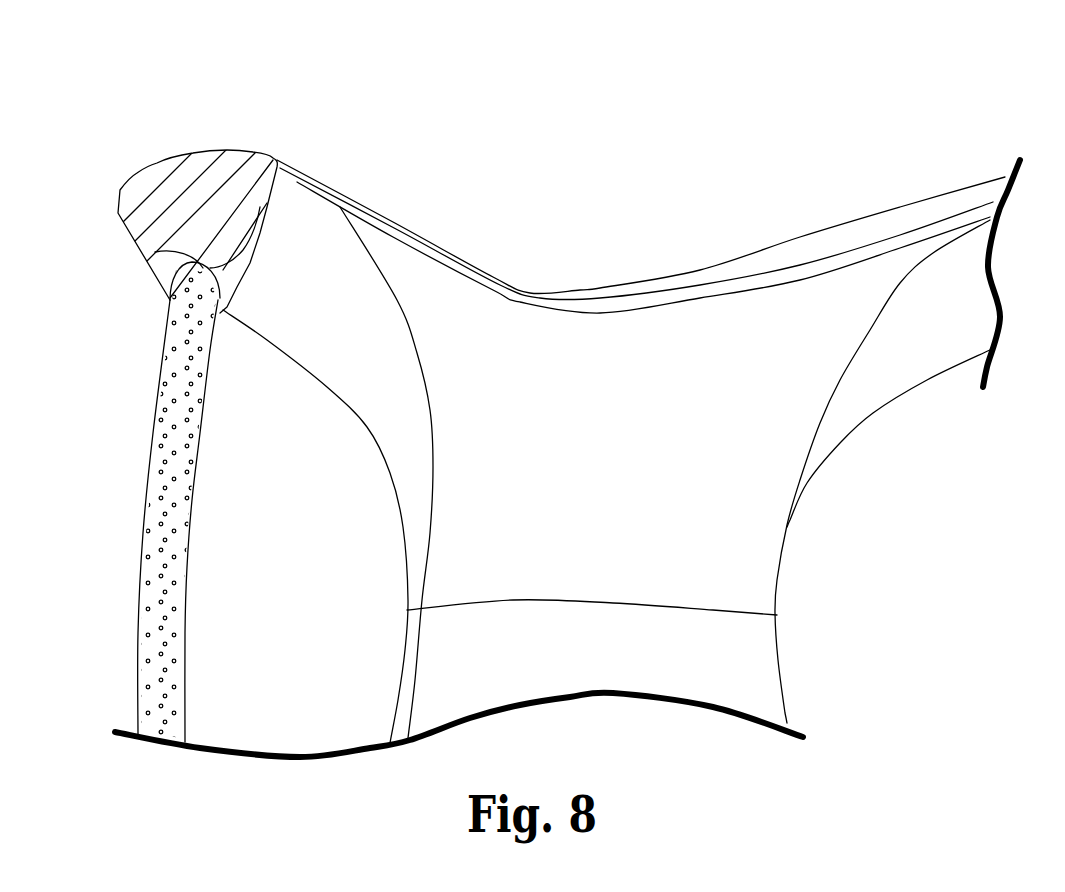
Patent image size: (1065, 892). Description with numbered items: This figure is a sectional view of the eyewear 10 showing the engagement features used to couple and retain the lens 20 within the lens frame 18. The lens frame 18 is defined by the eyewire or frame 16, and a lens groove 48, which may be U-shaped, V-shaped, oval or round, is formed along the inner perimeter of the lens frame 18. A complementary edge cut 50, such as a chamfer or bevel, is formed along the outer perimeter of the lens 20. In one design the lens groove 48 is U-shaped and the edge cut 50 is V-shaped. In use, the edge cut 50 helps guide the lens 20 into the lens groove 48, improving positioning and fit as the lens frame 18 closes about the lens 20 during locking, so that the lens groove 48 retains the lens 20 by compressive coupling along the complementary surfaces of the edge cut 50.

The eyewear 10 is at (118, 106).
The frame 16 is at (545, 293).
The lens frame 18 is at (217, 177).
The lens 20 is at (160, 664).
The lens groove 48 is at (275, 163).
The lens edge cut 50 is at (155, 252).